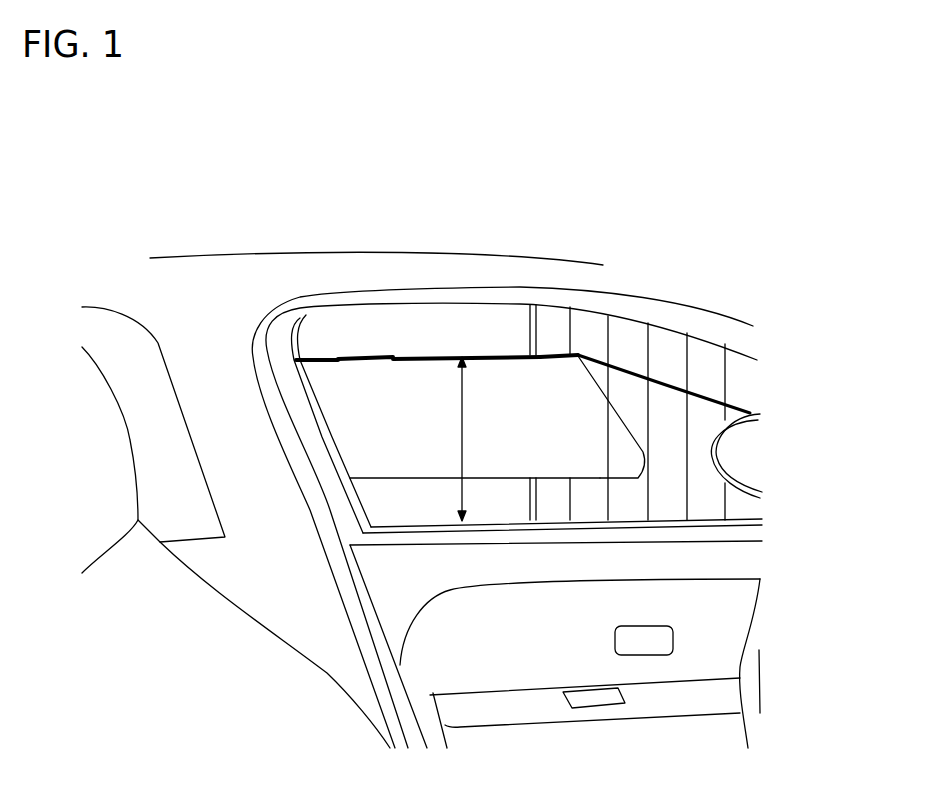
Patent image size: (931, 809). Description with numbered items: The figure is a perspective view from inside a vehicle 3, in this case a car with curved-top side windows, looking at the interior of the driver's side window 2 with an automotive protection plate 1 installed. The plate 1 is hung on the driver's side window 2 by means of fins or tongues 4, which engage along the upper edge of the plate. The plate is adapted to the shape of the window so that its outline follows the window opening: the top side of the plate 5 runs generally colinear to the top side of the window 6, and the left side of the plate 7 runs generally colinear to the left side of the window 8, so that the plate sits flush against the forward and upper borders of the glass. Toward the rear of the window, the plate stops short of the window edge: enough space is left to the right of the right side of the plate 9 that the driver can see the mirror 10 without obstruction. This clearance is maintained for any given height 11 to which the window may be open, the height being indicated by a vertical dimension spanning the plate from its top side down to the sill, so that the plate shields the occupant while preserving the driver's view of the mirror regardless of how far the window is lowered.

The automotive protection plate 1 is at (383, 460).
The driver's side window 2 is at (630, 383).
The vehicle 3 is at (319, 273).
The fins or tongues 4 is at (358, 361).
The top side of the plate 5 is at (440, 356).
The top side of the window 6 is at (618, 356).
The left side of the plate 7 is at (341, 437).
The left side of the window 8 is at (342, 457).
The right side of the plate 9 is at (624, 409).
The mirror 10 is at (738, 460).
The height 11 is at (479, 439).